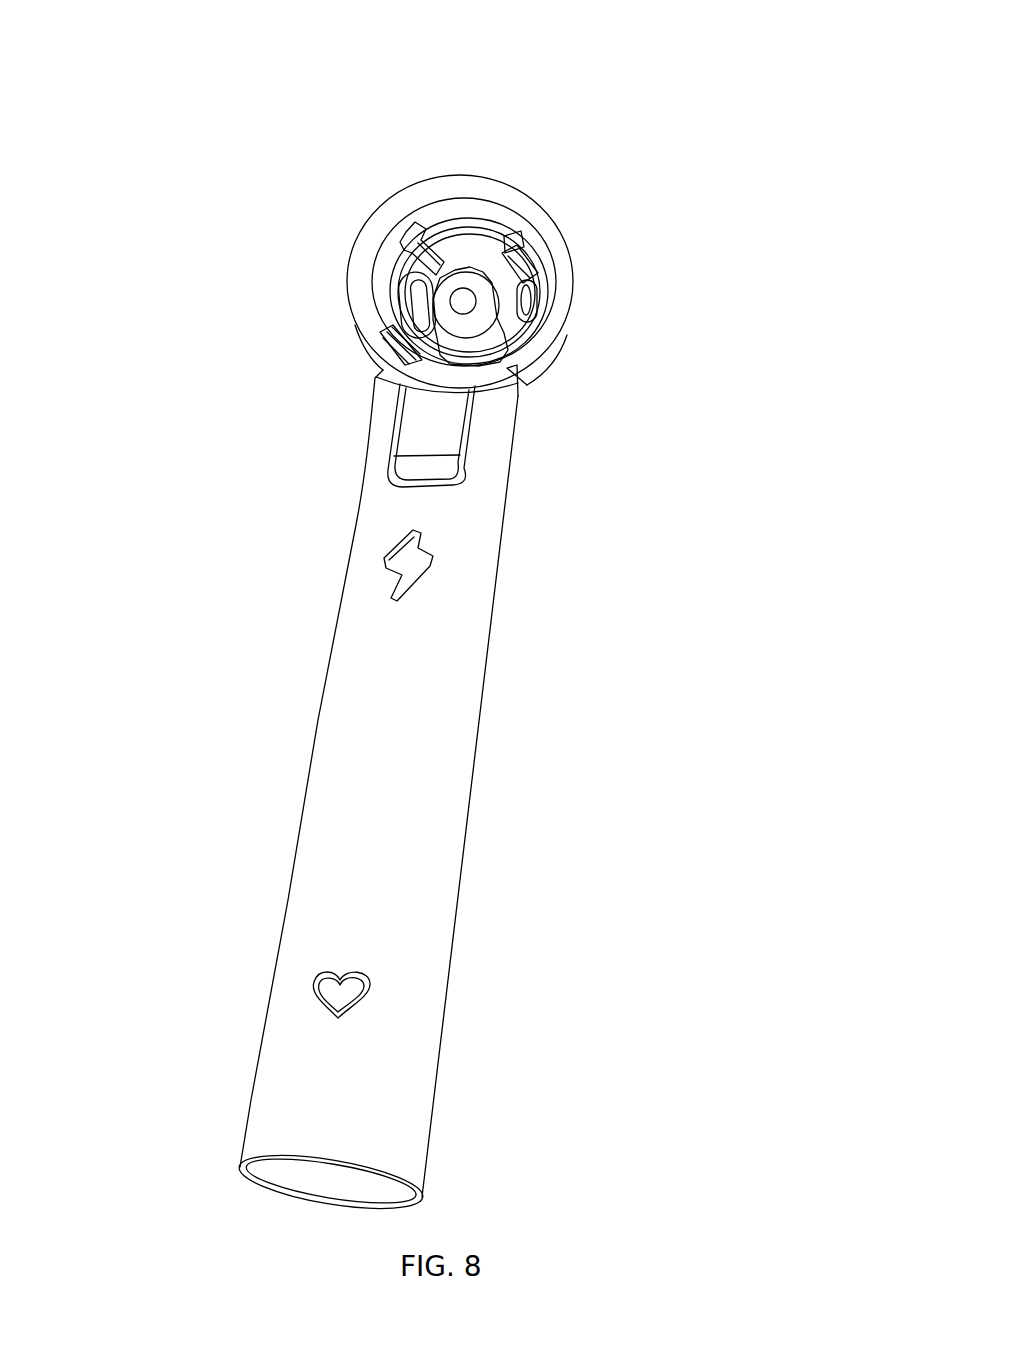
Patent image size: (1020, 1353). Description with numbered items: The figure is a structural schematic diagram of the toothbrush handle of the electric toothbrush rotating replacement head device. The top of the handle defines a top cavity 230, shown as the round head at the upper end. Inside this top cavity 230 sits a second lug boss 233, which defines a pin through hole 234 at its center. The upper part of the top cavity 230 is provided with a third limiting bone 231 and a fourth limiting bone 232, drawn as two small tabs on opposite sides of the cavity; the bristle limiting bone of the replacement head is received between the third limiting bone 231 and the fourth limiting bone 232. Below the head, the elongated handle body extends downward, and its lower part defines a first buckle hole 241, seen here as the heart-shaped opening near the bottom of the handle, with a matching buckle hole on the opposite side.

The top cavity 230 is at (487, 226).
The third limiting bone 231 is at (403, 227).
The fourth limiting bone 232 is at (522, 240).
The second lug boss 233 is at (487, 302).
The pin through hole 234 is at (458, 302).
The first buckle hole 241 is at (347, 1013).